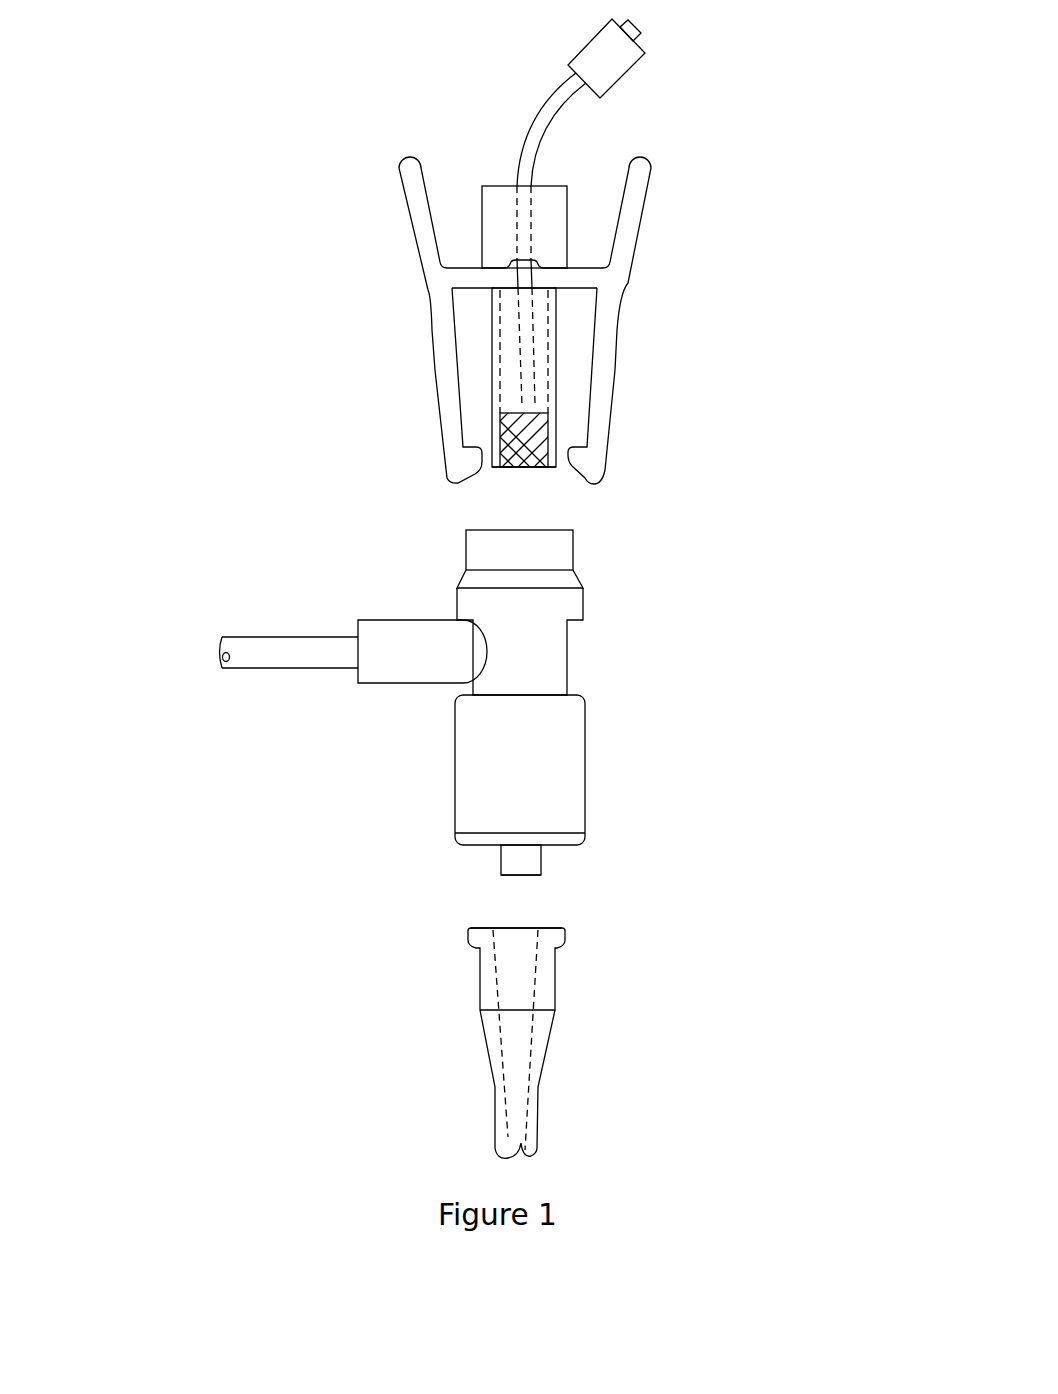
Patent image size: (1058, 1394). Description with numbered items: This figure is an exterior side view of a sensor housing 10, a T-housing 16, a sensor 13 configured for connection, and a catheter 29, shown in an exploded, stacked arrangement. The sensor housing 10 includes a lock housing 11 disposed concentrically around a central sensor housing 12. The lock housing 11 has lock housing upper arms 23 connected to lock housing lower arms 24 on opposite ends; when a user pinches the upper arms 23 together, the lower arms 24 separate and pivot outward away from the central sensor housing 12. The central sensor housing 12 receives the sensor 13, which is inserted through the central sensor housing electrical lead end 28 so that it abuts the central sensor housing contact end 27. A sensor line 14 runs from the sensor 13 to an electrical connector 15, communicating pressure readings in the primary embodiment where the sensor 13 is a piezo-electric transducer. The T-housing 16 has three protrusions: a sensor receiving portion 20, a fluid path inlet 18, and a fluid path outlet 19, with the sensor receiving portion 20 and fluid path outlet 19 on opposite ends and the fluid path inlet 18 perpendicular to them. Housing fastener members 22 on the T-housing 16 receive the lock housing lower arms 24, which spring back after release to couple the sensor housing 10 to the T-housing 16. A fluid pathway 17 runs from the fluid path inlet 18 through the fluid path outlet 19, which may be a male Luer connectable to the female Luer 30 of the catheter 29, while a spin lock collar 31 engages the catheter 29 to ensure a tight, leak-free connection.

The sensor housing 10 is at (517, 228).
The lock housing 11 is at (531, 372).
The central sensor housing 12 is at (577, 400).
The sensor 13 is at (538, 437).
The sensor line 14 is at (522, 91).
The electrical connector 15 is at (656, 45).
The T-housing 16 is at (437, 716).
The fluid pathway 17 is at (529, 901).
The fluid path inlet 18 is at (202, 653).
The fluid path outlet 19 is at (571, 867).
The sensor receiving portion 20 is at (601, 565).
The housing fastener members 22 is at (446, 606).
The lock housing upper arms 23 is at (384, 152).
The lock housing lower arms 24 is at (422, 444).
The central sensor housing contact end 27 is at (499, 477).
The central sensor housing electrical lead end 28 is at (507, 166).
The catheter 29 is at (486, 1029).
The female Luer 30 is at (492, 906).
The spin lock collar 31 is at (616, 776).